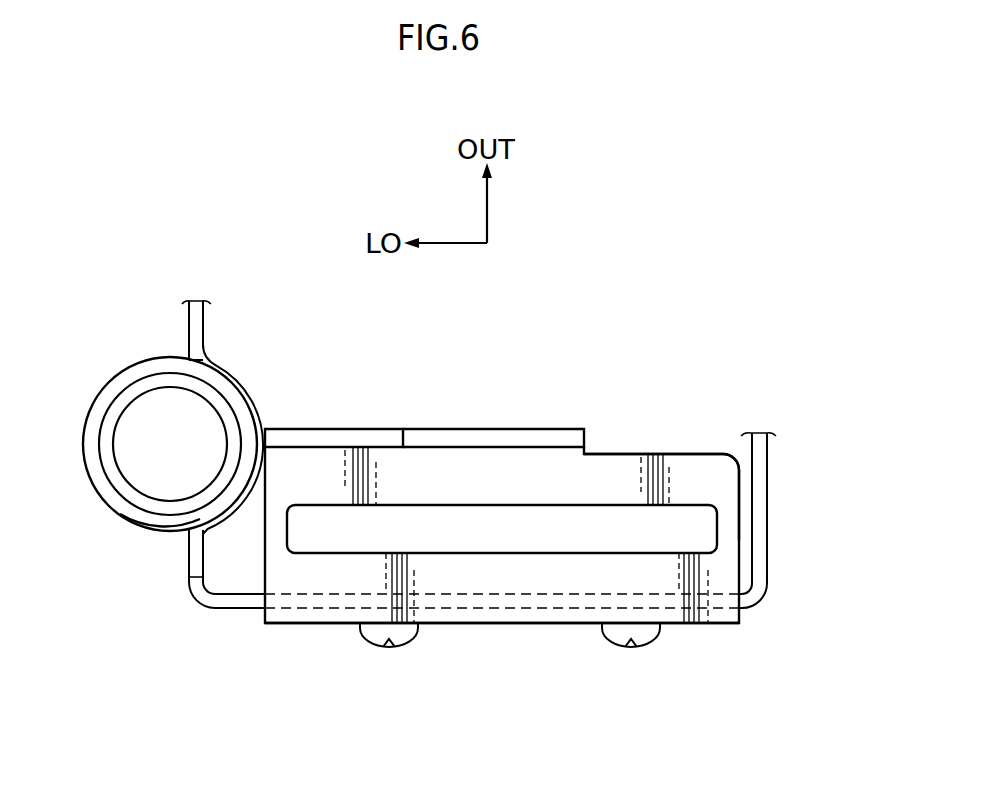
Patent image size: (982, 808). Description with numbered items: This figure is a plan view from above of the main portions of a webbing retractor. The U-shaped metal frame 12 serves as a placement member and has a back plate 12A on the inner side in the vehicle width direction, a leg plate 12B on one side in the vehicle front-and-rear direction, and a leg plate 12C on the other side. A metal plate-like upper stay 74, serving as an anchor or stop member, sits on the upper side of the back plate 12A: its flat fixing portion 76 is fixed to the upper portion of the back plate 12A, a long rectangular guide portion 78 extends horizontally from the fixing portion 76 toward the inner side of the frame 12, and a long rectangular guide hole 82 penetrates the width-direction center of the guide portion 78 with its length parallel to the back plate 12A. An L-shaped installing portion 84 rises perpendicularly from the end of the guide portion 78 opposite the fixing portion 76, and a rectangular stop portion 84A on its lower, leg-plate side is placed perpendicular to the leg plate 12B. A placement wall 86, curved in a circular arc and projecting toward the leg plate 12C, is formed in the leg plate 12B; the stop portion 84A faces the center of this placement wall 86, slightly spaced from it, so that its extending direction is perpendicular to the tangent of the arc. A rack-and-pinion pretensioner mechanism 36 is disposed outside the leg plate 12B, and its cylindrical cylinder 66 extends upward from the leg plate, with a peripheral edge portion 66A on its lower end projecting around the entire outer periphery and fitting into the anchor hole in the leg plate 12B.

The frame 12 is at (767, 595).
The back plate 12A is at (233, 610).
The leg plate 12B is at (188, 313).
The leg plate 12C is at (766, 487).
The pretensioner mechanism 36 is at (108, 378).
The cylinder 66 is at (112, 487).
The peripheral edge portion 66A is at (139, 527).
The upper stay 74 is at (622, 453).
The fixing portion 76 is at (503, 625).
The guide portion 78 is at (688, 455).
The guide hole 82 is at (537, 515).
The installing portion 84 is at (500, 437).
The stop portion 84A is at (338, 438).
The placement wall 86 is at (247, 393).